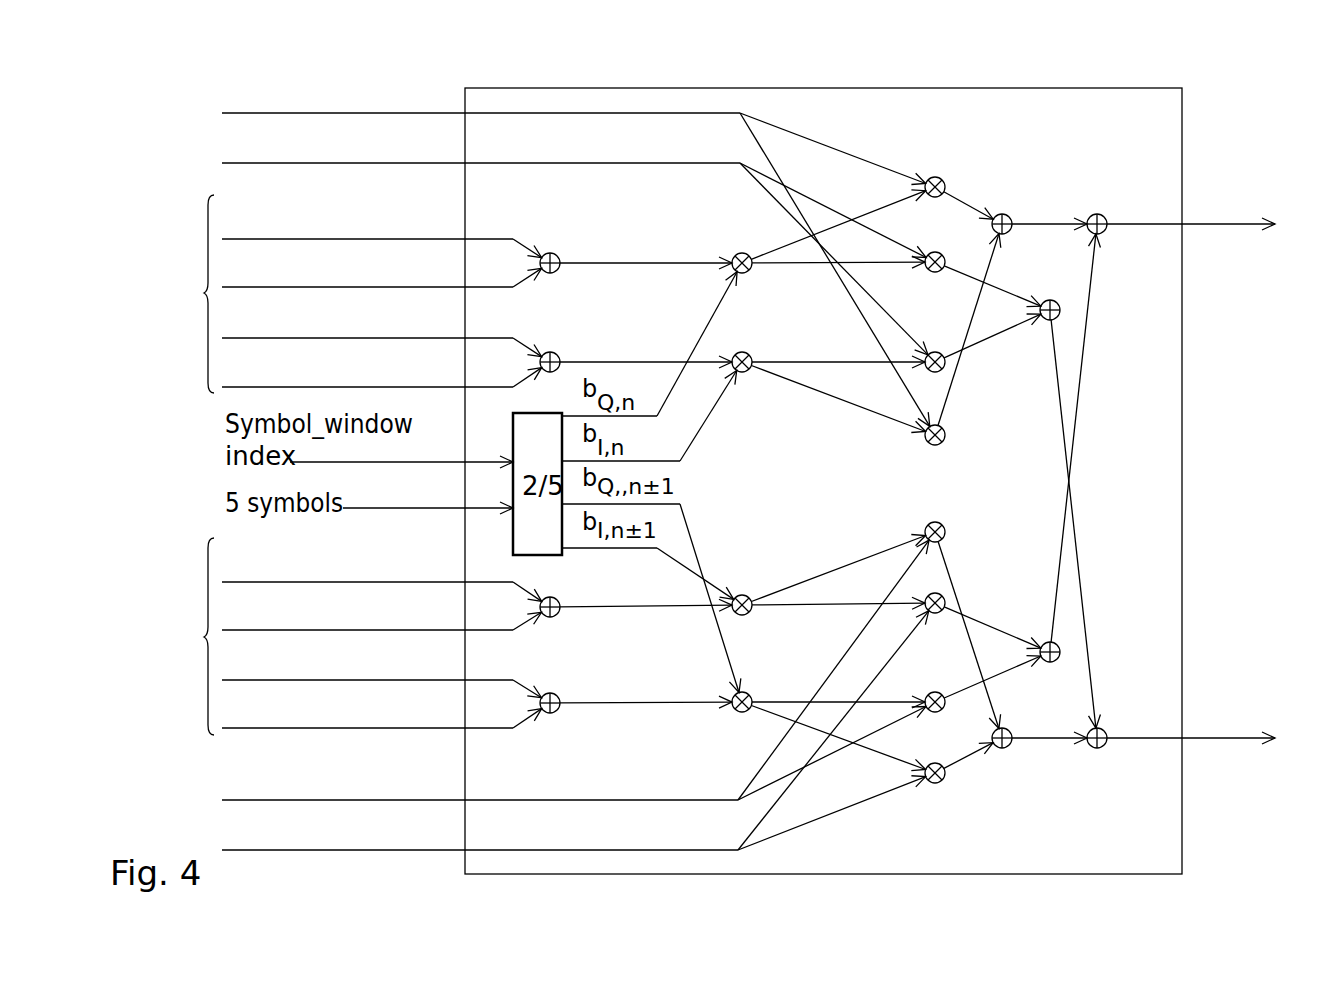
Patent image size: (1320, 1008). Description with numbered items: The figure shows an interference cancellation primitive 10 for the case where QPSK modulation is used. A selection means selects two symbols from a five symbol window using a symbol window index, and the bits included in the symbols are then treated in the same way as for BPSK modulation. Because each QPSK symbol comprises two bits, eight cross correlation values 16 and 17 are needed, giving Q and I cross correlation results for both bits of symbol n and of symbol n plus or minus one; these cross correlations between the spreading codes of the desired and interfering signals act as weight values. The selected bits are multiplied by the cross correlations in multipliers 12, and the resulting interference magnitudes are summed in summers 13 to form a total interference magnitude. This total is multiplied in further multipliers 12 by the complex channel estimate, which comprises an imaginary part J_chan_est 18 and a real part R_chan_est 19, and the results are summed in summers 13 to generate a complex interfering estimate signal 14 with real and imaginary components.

The interference cancellation primitive 10 is at (1182, 137).
The multiplier 12 is at (741, 253).
The summer 13 is at (554, 254).
The complex interfering estimate signal 14 is at (1205, 224).
The cross correlation 16 is at (352, 294).
The cross correlation 17 is at (352, 636).
The imaginary part of channel estimate 18 is at (443, 113).
The real part of channel estimate 19 is at (443, 163).